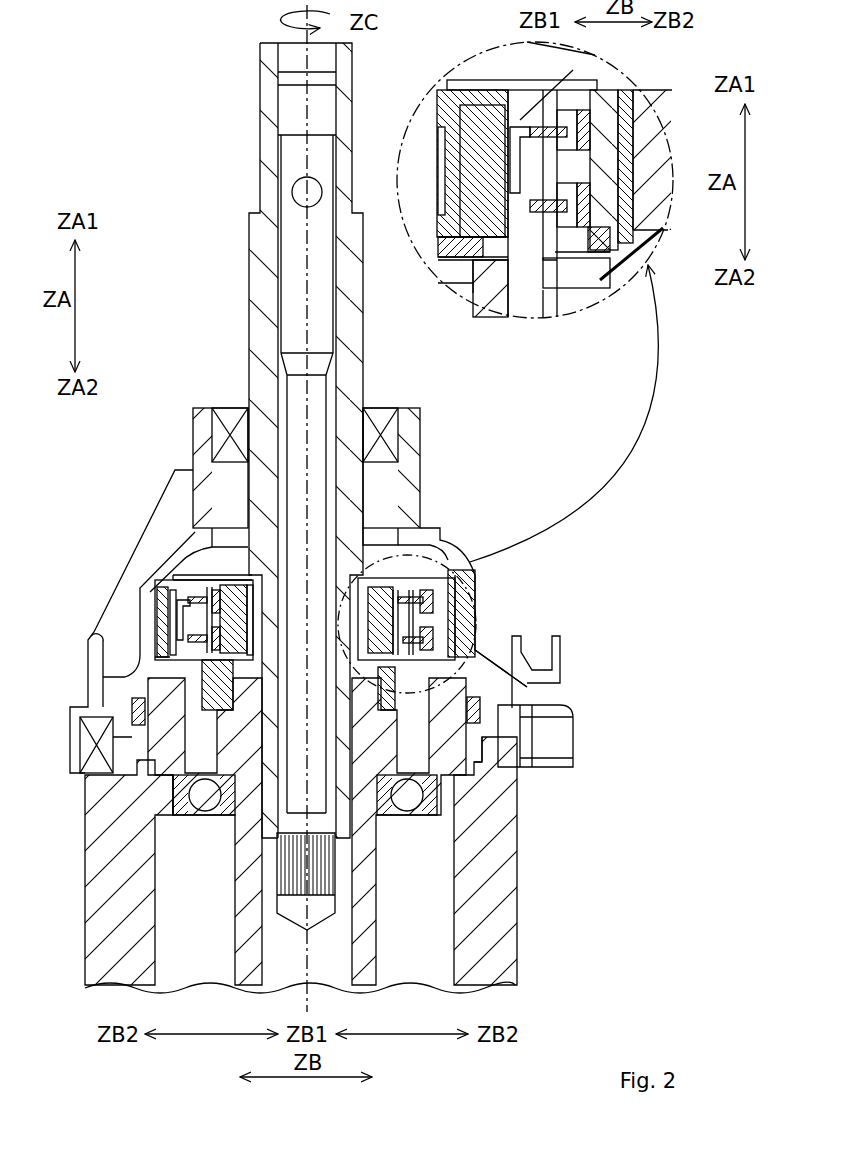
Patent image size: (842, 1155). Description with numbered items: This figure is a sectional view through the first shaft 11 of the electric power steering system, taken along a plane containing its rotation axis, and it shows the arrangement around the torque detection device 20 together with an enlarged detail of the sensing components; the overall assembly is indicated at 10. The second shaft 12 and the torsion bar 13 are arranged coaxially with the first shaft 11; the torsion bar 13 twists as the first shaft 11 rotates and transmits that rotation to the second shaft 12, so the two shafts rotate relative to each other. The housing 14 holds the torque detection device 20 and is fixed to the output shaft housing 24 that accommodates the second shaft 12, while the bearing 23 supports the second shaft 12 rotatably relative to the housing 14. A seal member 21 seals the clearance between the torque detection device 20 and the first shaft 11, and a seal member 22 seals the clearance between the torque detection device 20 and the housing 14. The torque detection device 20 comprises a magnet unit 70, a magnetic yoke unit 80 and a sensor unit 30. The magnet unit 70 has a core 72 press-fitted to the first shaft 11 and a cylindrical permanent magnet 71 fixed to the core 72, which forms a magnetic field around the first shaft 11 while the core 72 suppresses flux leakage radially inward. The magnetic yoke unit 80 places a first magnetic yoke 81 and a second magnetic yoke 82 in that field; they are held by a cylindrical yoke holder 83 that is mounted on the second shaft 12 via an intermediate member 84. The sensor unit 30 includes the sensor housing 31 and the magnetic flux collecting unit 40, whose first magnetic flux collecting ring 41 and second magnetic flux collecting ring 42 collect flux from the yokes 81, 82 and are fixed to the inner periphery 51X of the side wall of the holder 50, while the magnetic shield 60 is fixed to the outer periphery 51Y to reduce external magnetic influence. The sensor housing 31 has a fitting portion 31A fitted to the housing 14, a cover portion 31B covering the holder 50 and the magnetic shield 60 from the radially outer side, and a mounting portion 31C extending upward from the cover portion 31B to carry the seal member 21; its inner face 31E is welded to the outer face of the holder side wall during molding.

The motor 10 is at (251, 151).
The first shaft 11 is at (249, 262).
The second shaft 12 is at (377, 931).
The torsion bar 13 is at (281, 335).
The housing 14 is at (481, 764).
The torque detection device 20 is at (94, 502).
The seal member 21 is at (225, 408).
The seal member 22 is at (142, 727).
The bearing 23 is at (422, 822).
The output shaft housing 24 is at (515, 860).
The sensor unit 30 is at (162, 555).
The sensor housing 31 is at (72, 744).
The fitting portion 31A is at (138, 775).
The cover portion 31B is at (142, 583).
The mounting portion 31C is at (193, 438).
The inner face 31E is at (632, 112).
The magnetic flux collecting unit 40 is at (153, 621).
The first magnetic flux collecting ring 41 is at (594, 138).
The second magnetic flux collecting ring 42 is at (583, 198).
The holder 50 is at (448, 563).
The inner periphery 51X is at (565, 278).
The outer periphery 51Y is at (664, 240).
The magnetic shield 60 is at (456, 602).
The magnet unit 70 is at (237, 575).
The permanent magnet 71 is at (480, 105).
The core 72 is at (443, 90).
The magnetic yoke unit 80 is at (212, 713).
The first magnetic yoke 81 is at (519, 170).
The second magnetic yoke 82 is at (552, 213).
The yoke holder 83 is at (525, 314).
The intermediate member 84 is at (483, 313).